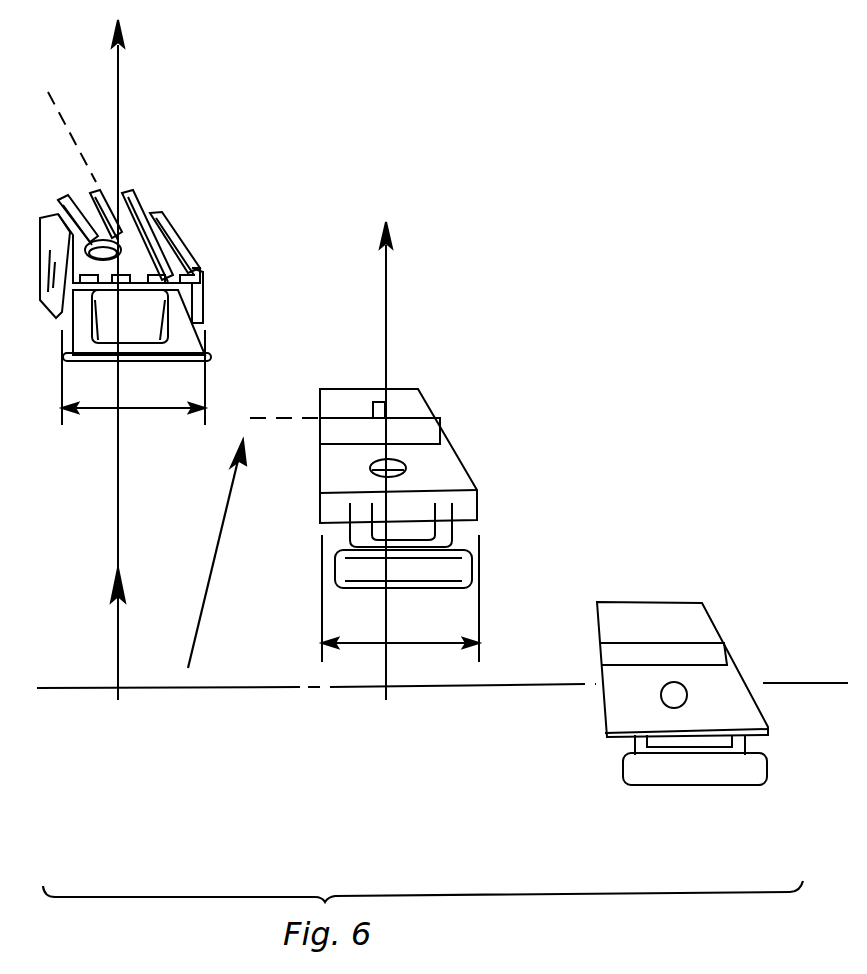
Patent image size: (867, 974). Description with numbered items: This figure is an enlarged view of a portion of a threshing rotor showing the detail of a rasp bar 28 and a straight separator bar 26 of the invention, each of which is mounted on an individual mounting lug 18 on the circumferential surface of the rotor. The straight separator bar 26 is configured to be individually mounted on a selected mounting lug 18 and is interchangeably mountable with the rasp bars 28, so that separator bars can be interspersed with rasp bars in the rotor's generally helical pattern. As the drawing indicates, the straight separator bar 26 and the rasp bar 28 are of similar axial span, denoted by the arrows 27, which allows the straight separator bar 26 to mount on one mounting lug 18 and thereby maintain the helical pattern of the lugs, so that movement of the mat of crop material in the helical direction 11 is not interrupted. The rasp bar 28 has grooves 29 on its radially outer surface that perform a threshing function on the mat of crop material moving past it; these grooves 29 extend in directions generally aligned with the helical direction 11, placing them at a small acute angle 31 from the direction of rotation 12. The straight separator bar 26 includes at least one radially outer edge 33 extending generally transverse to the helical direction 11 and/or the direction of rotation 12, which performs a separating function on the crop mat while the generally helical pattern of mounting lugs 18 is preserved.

The helical direction 11 is at (213, 568).
The direction of rotation 12 is at (120, 83).
The mounting lug 18 is at (183, 349).
The straight separator bar 26 is at (454, 420).
The arrows denoting axial span 27 is at (160, 412).
The rasp bar 28 is at (190, 246).
The grooves 29 is at (149, 216).
The small acute angle 31 is at (118, 173).
The radially outer edge 33 is at (408, 428).